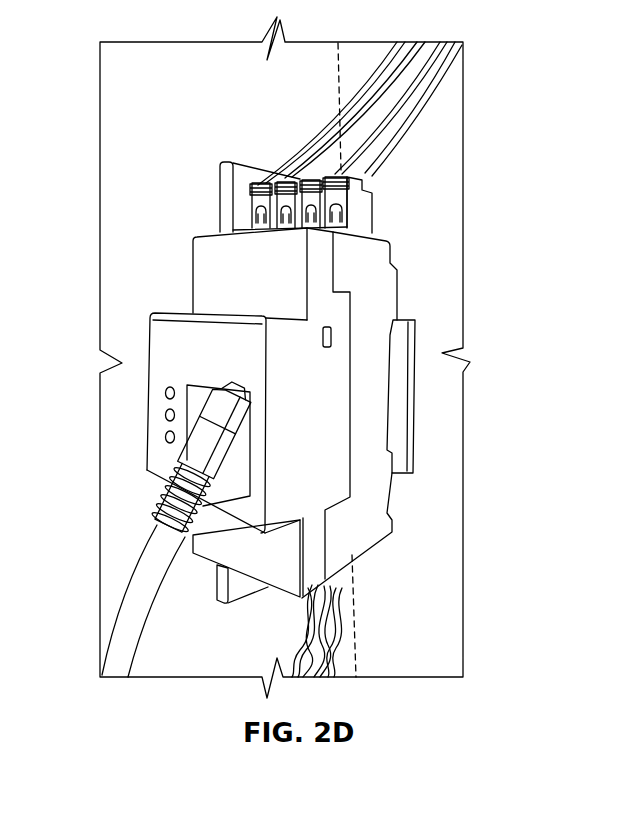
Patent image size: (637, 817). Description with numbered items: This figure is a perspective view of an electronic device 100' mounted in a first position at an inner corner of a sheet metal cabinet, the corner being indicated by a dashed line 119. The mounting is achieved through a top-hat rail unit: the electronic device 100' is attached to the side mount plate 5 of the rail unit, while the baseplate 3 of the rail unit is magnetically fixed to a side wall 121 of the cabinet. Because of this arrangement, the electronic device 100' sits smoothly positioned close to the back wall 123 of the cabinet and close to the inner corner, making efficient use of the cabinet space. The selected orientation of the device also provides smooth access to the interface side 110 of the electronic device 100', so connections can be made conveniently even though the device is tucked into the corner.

The baseplate 3 is at (218, 187).
The side mount plate 5 is at (422, 405).
The interface side 110 is at (146, 407).
The dashed line 119 is at (337, 60).
The side wall 121 is at (128, 262).
The back wall 123 is at (445, 100).
The electronic device 100' is at (320, 452).